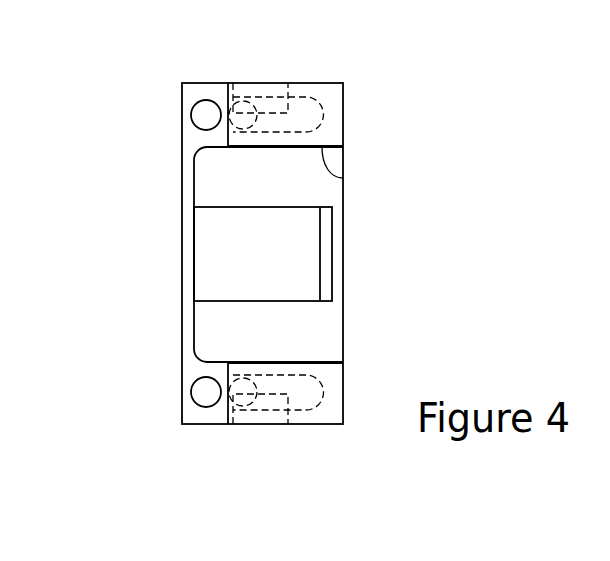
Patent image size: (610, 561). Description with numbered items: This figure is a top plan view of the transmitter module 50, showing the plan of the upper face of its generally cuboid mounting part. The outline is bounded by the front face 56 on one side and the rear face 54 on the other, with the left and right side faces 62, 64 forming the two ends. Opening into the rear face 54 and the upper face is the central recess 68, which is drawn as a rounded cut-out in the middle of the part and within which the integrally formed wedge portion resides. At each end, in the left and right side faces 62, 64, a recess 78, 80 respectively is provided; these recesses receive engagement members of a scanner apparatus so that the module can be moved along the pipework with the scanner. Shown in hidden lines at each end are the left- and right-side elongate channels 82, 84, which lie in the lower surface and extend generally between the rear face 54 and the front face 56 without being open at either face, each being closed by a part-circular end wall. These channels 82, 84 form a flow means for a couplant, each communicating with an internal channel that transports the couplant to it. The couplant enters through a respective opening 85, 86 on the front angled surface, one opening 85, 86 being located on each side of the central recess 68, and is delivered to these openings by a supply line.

The mounting plate 50 is at (382, 73).
The rear face 54 is at (354, 240).
The front face 56 is at (171, 207).
The left side face 62 is at (256, 74).
The right side face 64 is at (244, 440).
The central recess 68 is at (343, 178).
The recess 78 is at (290, 96).
The recess 80 is at (288, 405).
The left-side elongate channel 82 is at (343, 107).
The right-side elongate channel 84 is at (308, 388).
The opening 85 is at (194, 108).
The opening 86 is at (195, 398).